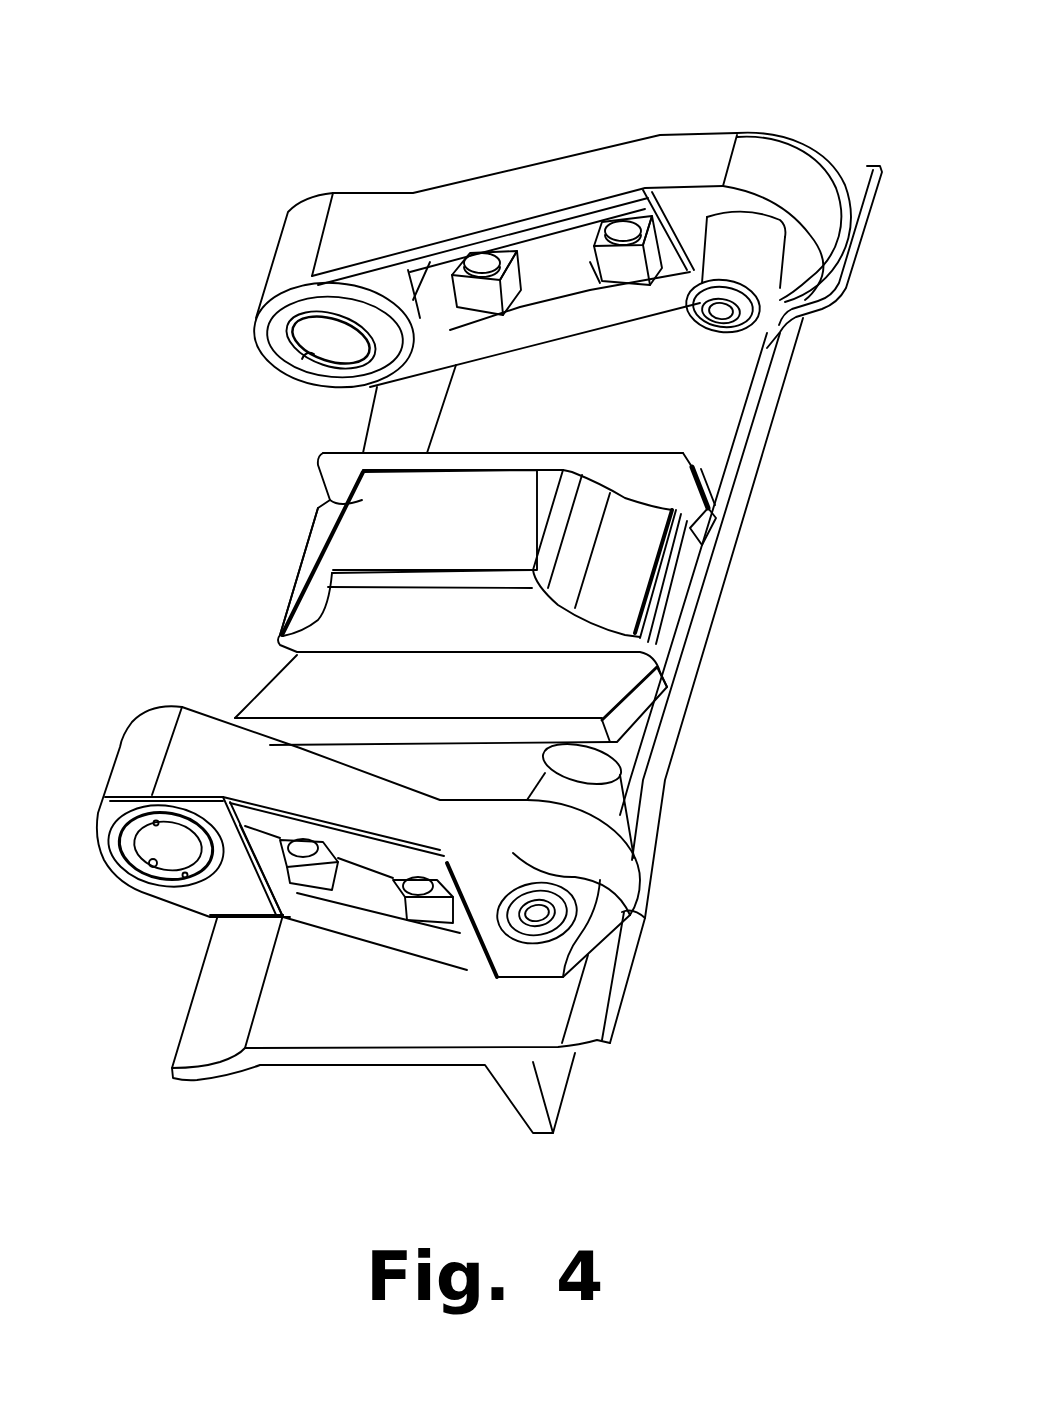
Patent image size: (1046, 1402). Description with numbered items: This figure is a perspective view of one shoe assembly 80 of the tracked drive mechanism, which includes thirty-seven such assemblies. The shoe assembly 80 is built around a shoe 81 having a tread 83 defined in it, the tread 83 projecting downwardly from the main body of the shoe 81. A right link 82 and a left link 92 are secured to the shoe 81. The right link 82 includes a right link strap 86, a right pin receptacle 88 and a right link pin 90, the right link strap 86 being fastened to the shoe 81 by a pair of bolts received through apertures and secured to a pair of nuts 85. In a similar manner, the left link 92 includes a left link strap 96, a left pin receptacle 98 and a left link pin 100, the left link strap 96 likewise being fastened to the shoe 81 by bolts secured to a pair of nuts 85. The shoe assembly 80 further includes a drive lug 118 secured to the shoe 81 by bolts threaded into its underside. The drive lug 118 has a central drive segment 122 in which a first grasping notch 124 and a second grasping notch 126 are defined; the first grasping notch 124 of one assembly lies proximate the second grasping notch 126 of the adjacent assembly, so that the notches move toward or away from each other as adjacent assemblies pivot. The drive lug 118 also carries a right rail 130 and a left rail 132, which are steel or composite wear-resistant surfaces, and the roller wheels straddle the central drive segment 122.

The shoe assembly 80 is at (154, 95).
The shoe 81 is at (727, 407).
The right link 82 is at (613, 870).
The tread 83 is at (553, 1095).
The nuts 85 is at (492, 303).
The right link strap 86 is at (373, 807).
The right pin receptacle 88 is at (140, 870).
The right link pin 90 is at (593, 793).
The left link 92 is at (800, 183).
The left link strap 96 is at (432, 203).
The left pin receptacle 98 is at (310, 350).
The left link pin 100 is at (790, 307).
The drive lug 118 is at (724, 633).
The central drive segment 122 is at (373, 533).
The first grasping notch 124 is at (303, 592).
The second grasping notch 126 is at (630, 545).
The right rail 130 is at (620, 680).
The left rail 132 is at (687, 490).